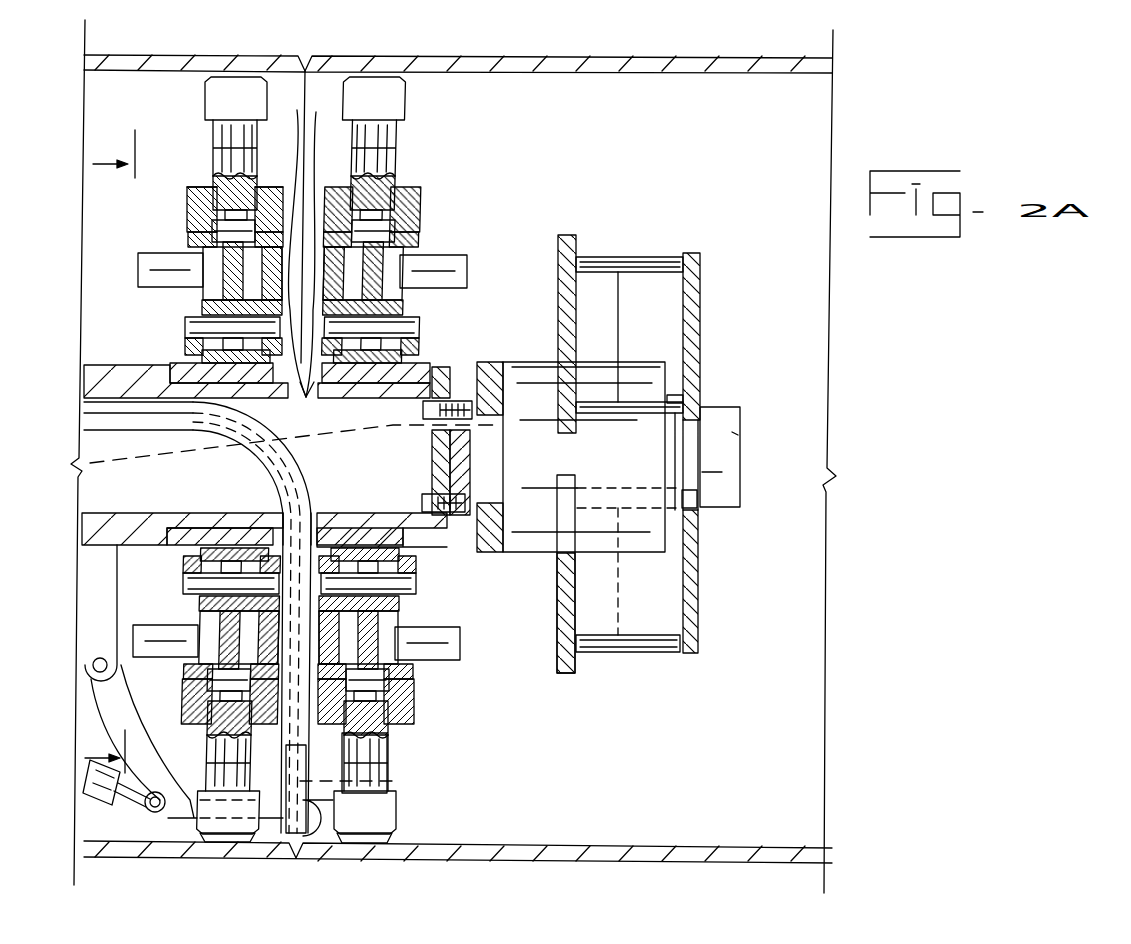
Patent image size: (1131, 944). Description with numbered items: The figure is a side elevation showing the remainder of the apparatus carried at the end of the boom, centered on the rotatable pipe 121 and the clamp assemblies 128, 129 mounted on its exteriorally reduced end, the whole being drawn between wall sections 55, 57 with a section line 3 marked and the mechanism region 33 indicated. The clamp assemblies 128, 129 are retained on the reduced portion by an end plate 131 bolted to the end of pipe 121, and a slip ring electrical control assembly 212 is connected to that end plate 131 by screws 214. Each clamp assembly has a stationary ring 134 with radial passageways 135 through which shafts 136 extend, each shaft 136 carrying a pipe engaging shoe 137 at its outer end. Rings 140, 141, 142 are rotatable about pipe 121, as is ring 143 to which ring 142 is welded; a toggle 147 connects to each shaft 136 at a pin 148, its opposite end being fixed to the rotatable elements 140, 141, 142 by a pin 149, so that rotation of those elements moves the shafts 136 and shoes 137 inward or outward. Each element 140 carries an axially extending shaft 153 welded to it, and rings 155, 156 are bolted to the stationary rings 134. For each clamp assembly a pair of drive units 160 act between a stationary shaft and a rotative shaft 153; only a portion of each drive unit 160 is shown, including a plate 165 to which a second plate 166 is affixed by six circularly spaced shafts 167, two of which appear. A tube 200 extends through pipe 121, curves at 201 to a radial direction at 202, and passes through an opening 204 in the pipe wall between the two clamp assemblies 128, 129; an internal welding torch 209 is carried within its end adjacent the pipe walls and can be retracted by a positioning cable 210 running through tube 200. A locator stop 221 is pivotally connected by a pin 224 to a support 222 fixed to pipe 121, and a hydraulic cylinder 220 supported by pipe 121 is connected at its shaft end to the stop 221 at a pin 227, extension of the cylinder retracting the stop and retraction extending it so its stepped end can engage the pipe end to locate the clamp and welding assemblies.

The upper wall section 55 is at (165, 54).
The upper wall section 57 is at (486, 55).
The section line 3- 3 is at (109, 451).
The tape feed mechanism frame 33 is at (530, 194).
The clamp assembly 128 is at (183, 132).
The clamp assembly 129 is at (444, 134).
The pipe 121 is at (143, 546).
The pipe engaging shoe 137 is at (205, 87).
The shaft 136 is at (257, 145).
The ring 134 is at (213, 180).
The radial passageway 135 is at (273, 186).
The ring 155 is at (187, 200).
The pin 148 is at (225, 218).
The ring 140 is at (188, 241).
The shaft 153 is at (138, 270).
The toggle 147 is at (202, 306).
The pin 149 is at (185, 332).
The ring 142 is at (200, 364).
The ring 141 is at (305, 398).
The ring 156 is at (309, 244).
The end plate 131 is at (455, 368).
The screw 214 is at (443, 367).
The ring 143 is at (222, 384).
The tube 200 is at (145, 432).
The curve 201 is at (310, 468).
The positioning cable 210 is at (277, 463).
The opening 204 is at (323, 515).
The slip ring electrical control assembly 212 is at (523, 566).
The drive unit 160 is at (720, 285).
The plate 165 is at (567, 235).
The second plate 166 is at (694, 253).
The shaft 167 is at (637, 257).
The support 222 is at (170, 593).
The pin 224 is at (116, 668).
The locator stop 221 is at (158, 727).
The hydraulic cylinder 220 is at (93, 804).
The pin 227 is at (150, 808).
The radial direction 202 is at (330, 752).
The internal welding torch 209 is at (397, 779).